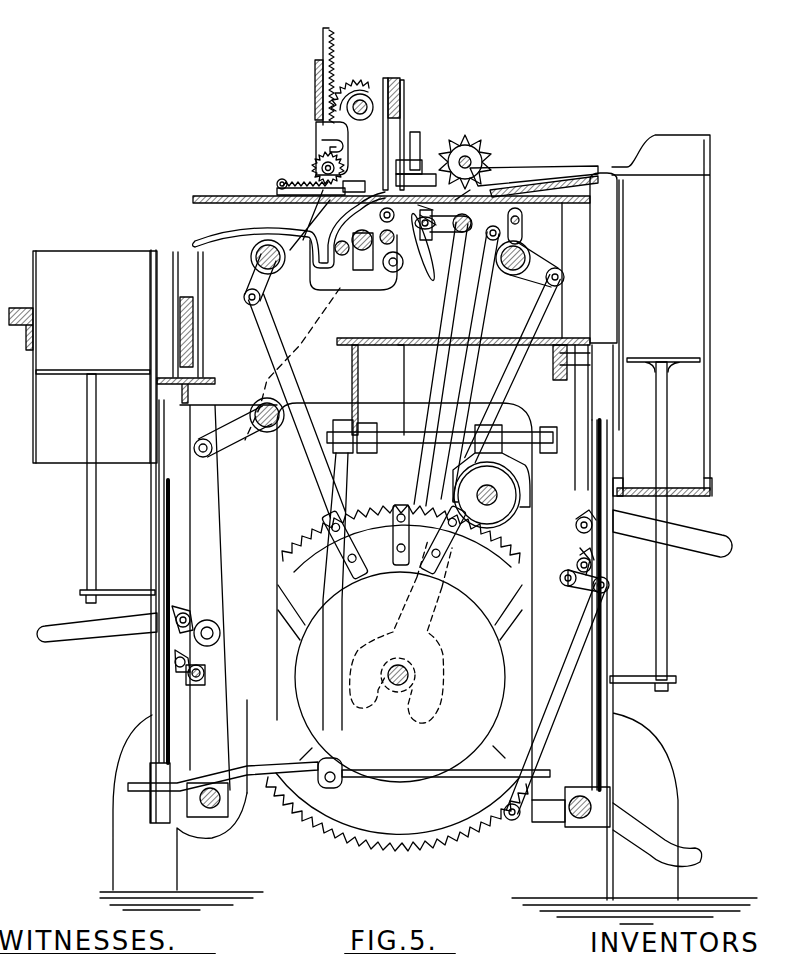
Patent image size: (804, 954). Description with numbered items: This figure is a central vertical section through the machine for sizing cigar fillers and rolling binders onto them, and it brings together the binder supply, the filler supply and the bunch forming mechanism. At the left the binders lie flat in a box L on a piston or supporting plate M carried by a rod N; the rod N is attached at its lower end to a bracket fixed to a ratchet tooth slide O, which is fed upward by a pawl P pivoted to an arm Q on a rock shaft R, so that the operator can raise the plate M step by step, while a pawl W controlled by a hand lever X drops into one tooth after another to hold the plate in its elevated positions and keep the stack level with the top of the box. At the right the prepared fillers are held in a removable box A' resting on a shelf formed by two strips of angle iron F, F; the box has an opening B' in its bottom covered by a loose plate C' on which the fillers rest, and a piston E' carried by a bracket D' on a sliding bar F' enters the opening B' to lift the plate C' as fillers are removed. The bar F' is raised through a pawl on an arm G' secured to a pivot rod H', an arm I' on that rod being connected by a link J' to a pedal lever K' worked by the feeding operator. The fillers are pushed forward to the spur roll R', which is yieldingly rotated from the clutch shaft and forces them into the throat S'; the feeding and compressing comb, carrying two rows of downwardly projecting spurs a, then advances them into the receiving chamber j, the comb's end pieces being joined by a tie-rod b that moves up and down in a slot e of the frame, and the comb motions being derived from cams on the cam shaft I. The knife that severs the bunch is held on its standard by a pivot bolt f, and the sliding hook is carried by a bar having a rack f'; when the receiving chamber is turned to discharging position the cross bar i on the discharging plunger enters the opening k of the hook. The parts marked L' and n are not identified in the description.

The box L is at (83, 338).
The piston or supporting plate M is at (65, 370).
The rod N is at (84, 502).
The block L' is at (155, 322).
The rack f' is at (333, 68).
The opening k is at (322, 144).
The cross bar i is at (277, 186).
The pivot bolt f is at (417, 124).
The throat S' is at (465, 147).
The spur roll R' is at (480, 147).
The spurs a is at (485, 160).
The bar n is at (500, 163).
The receiving chamber j is at (423, 247).
The tie-rod b is at (420, 222).
The slot e is at (455, 205).
The removable box A' is at (662, 312).
The loose plate C' is at (663, 351).
The piston E' is at (646, 521).
The bracket D' is at (659, 668).
The opening B' is at (676, 461).
The strips of angle iron F is at (681, 481).
The sliding bar F' is at (627, 660).
The cam shaft I is at (498, 476).
The arm G' is at (558, 573).
The pivot rod H' is at (562, 596).
The arm I' is at (581, 608).
The link J' is at (555, 702).
The pedal lever K' is at (633, 827).
The hand lever X is at (87, 630).
The pawl W is at (175, 613).
The arm Q is at (193, 660).
The pawl P is at (178, 654).
The rock shaft R is at (216, 677).
The ratchet tooth slide O is at (163, 692).